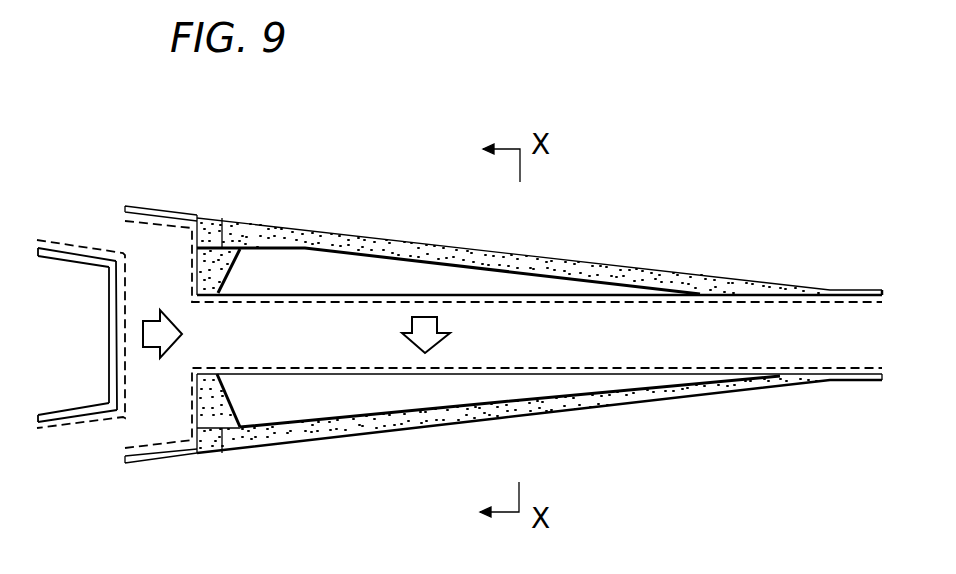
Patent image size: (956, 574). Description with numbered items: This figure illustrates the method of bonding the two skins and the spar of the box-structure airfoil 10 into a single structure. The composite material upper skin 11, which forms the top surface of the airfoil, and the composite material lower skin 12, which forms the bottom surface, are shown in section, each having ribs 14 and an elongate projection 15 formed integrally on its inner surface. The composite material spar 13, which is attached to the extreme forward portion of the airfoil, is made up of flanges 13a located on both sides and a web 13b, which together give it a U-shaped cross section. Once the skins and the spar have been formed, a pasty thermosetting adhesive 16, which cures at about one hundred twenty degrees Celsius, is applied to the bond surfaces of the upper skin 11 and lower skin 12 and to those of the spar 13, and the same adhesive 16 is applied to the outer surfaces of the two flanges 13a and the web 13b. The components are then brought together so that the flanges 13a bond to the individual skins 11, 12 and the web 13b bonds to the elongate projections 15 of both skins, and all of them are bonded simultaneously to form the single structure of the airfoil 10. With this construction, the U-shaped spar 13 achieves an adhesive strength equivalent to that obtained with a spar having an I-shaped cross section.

The box-structure airfoil 10 is at (615, 199).
The upper skin 11 is at (337, 234).
The lower skin 12 is at (347, 438).
The spar 13 is at (64, 234).
The flanges 13a is at (78, 267).
The web 13b is at (110, 338).
The ribs 14 is at (527, 285).
The elongate projection 15 is at (222, 262).
The pasty thermosetting adhesive 16 is at (563, 302).